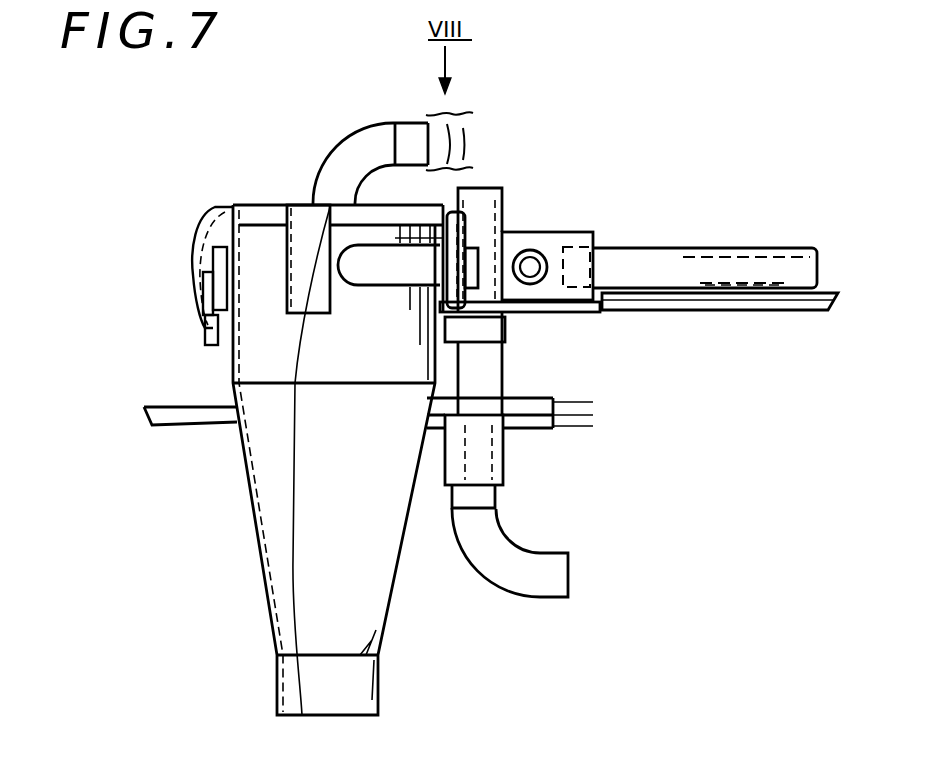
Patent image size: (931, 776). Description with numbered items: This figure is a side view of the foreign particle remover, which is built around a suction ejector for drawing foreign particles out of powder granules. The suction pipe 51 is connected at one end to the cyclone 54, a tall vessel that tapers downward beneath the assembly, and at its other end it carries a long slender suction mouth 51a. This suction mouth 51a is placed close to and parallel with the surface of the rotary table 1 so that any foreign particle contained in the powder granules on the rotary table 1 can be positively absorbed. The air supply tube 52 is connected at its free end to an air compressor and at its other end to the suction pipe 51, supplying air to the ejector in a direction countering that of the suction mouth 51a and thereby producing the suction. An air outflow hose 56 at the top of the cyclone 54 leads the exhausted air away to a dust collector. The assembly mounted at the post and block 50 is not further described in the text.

The rotary table 1 is at (678, 303).
The valve unit 50 is at (572, 215).
The suction pipe 51 is at (687, 250).
The suction mouth 51a is at (760, 290).
The air supply tube 52 is at (537, 280).
The cyclone 54 is at (365, 602).
The air outflow hose 56 is at (367, 147).